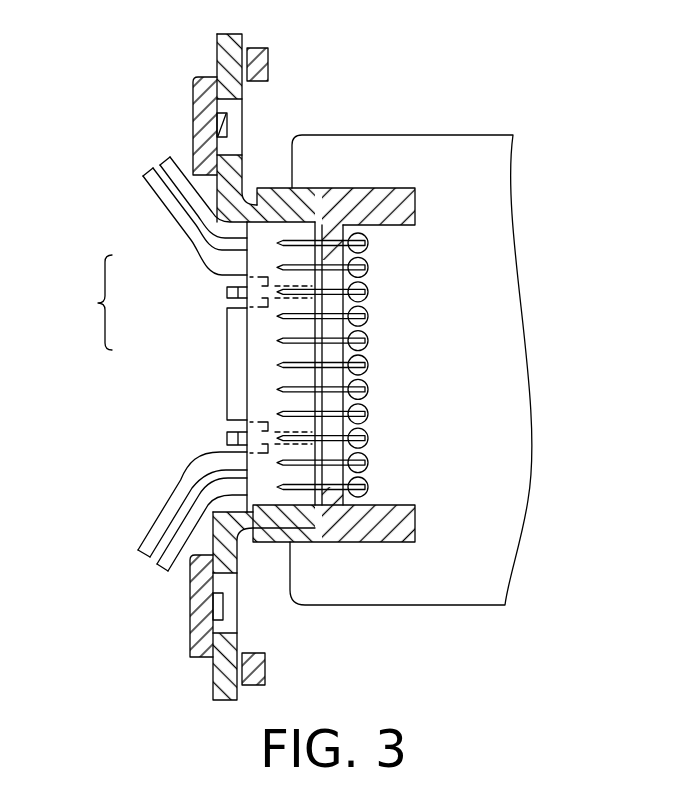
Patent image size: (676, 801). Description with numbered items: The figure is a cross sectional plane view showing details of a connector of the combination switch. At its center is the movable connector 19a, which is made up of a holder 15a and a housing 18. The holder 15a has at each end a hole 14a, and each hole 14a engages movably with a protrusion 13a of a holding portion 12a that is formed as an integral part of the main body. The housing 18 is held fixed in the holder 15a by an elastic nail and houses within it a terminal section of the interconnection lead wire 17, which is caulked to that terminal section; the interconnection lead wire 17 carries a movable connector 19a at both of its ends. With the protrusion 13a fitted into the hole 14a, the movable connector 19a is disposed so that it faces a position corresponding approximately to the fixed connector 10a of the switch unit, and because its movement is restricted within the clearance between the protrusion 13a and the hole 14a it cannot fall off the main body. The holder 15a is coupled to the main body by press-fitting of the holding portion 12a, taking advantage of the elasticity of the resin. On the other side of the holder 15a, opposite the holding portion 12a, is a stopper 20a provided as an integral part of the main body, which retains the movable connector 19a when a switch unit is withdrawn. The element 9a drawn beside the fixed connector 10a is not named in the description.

The panel 9a is at (465, 143).
The fixed connector 10a is at (372, 188).
The holding portion 12a is at (195, 112).
The protrusion 13a is at (222, 118).
The hole 14a is at (236, 144).
The holder 15a is at (233, 213).
The interconnection lead wire 17 is at (180, 490).
The housing 18 is at (258, 353).
The movable connector 19a is at (77, 302).
The stopper 20a is at (265, 54).